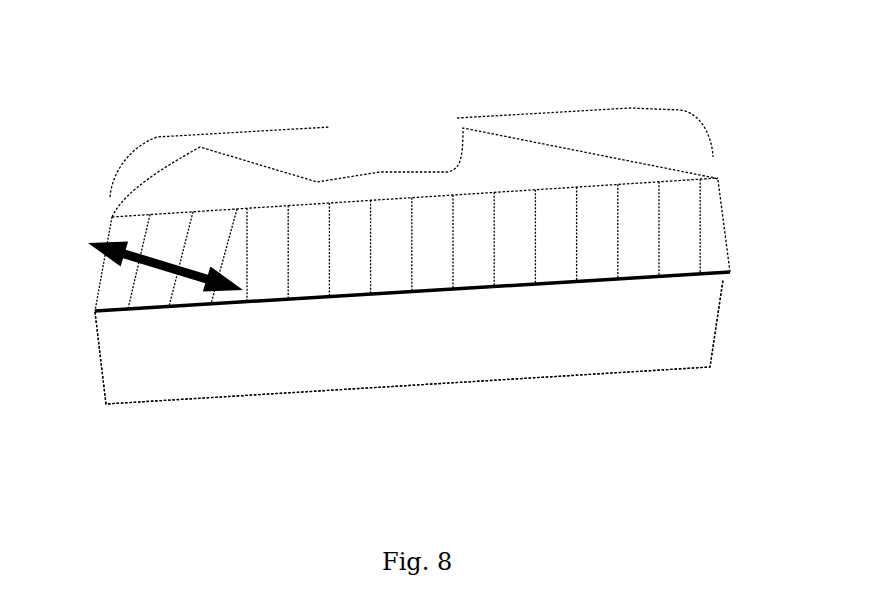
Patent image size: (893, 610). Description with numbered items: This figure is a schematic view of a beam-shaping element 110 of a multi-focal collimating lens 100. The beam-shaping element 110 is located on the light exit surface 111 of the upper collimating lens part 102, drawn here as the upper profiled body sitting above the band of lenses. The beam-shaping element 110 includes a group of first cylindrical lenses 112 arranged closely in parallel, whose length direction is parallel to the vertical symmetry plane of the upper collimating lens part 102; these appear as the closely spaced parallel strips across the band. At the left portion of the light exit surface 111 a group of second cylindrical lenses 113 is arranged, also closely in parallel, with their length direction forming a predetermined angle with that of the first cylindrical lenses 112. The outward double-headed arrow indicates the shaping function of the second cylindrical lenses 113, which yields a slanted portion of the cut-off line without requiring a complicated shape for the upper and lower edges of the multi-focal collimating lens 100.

The multi-focal collimating lens 100 is at (97, 58).
The beam-shaping element 110 is at (457, 118).
The upper collimating lens part 102 is at (415, 172).
The light exit surface 111 is at (425, 280).
The second cylindrical lenses 113 is at (232, 317).
The first cylindrical lenses 112 is at (702, 387).